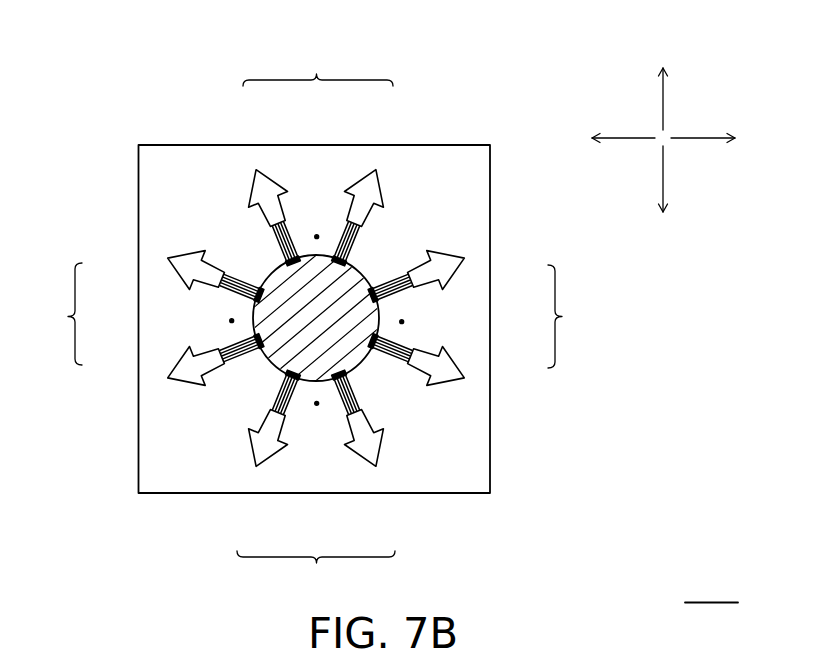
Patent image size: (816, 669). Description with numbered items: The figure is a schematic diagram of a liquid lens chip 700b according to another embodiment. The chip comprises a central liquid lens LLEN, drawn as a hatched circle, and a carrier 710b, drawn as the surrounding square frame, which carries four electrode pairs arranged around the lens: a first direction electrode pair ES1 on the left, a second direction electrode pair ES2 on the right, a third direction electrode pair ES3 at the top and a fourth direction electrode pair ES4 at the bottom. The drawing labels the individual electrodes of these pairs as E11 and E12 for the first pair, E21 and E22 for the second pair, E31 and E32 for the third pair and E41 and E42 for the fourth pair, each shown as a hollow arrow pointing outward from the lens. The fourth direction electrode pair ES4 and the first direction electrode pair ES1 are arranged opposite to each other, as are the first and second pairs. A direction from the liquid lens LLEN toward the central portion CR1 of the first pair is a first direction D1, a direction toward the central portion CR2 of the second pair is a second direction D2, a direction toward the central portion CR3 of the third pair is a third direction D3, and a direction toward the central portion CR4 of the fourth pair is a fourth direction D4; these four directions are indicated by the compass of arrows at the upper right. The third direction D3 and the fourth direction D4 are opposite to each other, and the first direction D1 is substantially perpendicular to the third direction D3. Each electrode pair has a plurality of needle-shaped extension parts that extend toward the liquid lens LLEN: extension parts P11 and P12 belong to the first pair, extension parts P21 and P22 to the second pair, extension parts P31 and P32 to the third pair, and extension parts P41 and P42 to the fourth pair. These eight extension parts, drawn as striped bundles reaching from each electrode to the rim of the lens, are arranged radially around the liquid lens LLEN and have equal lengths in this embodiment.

The carrier 710b is at (166, 116).
The liquid lens chip 700b is at (711, 592).
The liquid lens LLEN is at (373, 284).
The first direction electrode pair ES1 is at (54, 314).
The second direction electrode pair ES2 is at (577, 316).
The third direction electrode pair ES3 is at (318, 64).
The fourth direction electrode pair ES4 is at (316, 576).
The light emitting element E11 is at (198, 254).
The light emitting element E12 is at (182, 370).
The light emitting element E21 is at (445, 262).
The light emitting element E22 is at (440, 366).
The light emitting element E31 is at (247, 181).
The light emitting element E32 is at (378, 186).
The light emitting element E41 is at (247, 457).
The light emitting element E42 is at (381, 450).
The central portion of the first direction electrode pair CR1 is at (231, 320).
The central portion of the second direction electrode pair CR2 is at (402, 322).
The central portion of the third direction electrode pair CR3 is at (317, 236).
The central portion of the fourth direction electrode pair CR4 is at (317, 404).
The extension part P11 is at (228, 272).
The extension part P12 is at (228, 348).
The extension part P21 is at (398, 292).
The extension part P22 is at (402, 362).
The extension part P31 is at (286, 240).
The extension part P32 is at (358, 236).
The extension part P41 is at (270, 393).
The extension part P42 is at (347, 405).
The first direction D1 is at (608, 140).
The second direction D2 is at (719, 141).
The third direction D3 is at (663, 82).
The fourth direction D4 is at (663, 196).